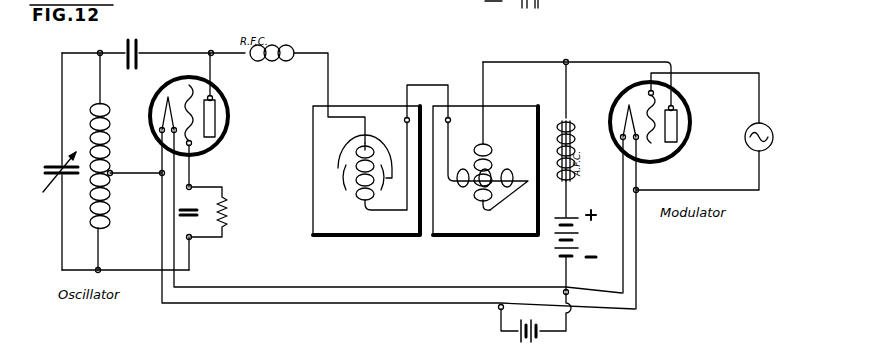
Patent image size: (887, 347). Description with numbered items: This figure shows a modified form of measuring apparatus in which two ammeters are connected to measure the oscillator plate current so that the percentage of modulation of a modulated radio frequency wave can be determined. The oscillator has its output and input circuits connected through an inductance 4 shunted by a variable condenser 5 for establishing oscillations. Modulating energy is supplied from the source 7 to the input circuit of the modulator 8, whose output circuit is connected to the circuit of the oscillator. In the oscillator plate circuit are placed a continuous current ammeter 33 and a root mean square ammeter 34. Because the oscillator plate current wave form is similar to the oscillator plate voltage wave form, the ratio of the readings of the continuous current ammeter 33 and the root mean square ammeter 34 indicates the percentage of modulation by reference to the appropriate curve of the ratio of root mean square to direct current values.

The inductance 4 is at (228, 132).
The variable condenser 5 is at (55, 158).
The source 7 is at (773, 124).
The modulator 8 is at (697, 125).
The continuous current ammeter 33 is at (362, 112).
The root mean square ammeter 34 is at (495, 118).